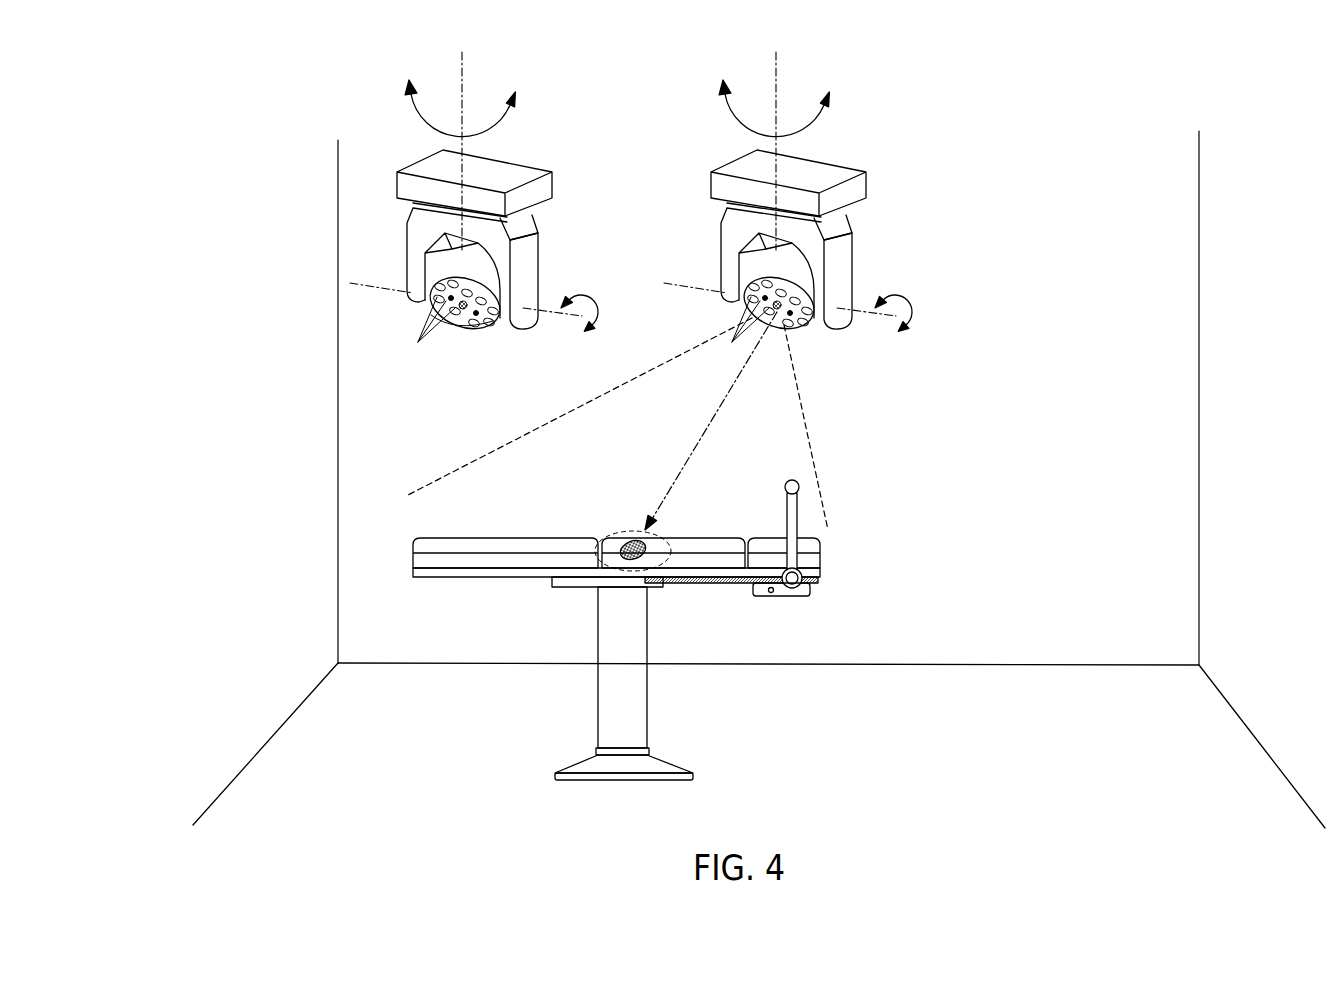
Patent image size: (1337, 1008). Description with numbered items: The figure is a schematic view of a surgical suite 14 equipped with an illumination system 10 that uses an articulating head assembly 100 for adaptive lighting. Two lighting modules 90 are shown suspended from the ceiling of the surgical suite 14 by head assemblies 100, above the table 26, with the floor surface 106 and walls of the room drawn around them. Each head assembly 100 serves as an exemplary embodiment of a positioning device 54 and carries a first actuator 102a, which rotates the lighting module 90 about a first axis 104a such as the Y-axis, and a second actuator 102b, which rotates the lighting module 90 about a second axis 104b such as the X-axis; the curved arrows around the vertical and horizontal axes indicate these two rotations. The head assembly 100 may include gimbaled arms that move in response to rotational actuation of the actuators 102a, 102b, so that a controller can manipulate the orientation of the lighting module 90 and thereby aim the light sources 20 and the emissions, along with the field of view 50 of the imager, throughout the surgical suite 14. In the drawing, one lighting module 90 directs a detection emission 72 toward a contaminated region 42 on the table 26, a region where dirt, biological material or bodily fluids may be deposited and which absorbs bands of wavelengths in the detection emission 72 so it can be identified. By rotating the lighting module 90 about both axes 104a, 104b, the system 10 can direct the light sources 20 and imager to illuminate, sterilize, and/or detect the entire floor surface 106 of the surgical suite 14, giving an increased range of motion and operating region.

The illumination system 10 is at (1027, 119).
The surgical suite 14 is at (280, 535).
The light sources 20 is at (418, 342).
The table 26 is at (560, 578).
The contaminated region 42 is at (620, 537).
The field of view 50 is at (672, 433).
The positioning device 54 is at (547, 280).
The detection emission 72 is at (727, 398).
The lighting module 90 is at (481, 333).
The articulating head assembly 100 is at (357, 218).
The first actuator 102a is at (437, 163).
The second actuator 102b is at (420, 290).
The first axis 104a is at (460, 83).
The second axis 104b is at (370, 287).
The floor surface 106 is at (940, 684).